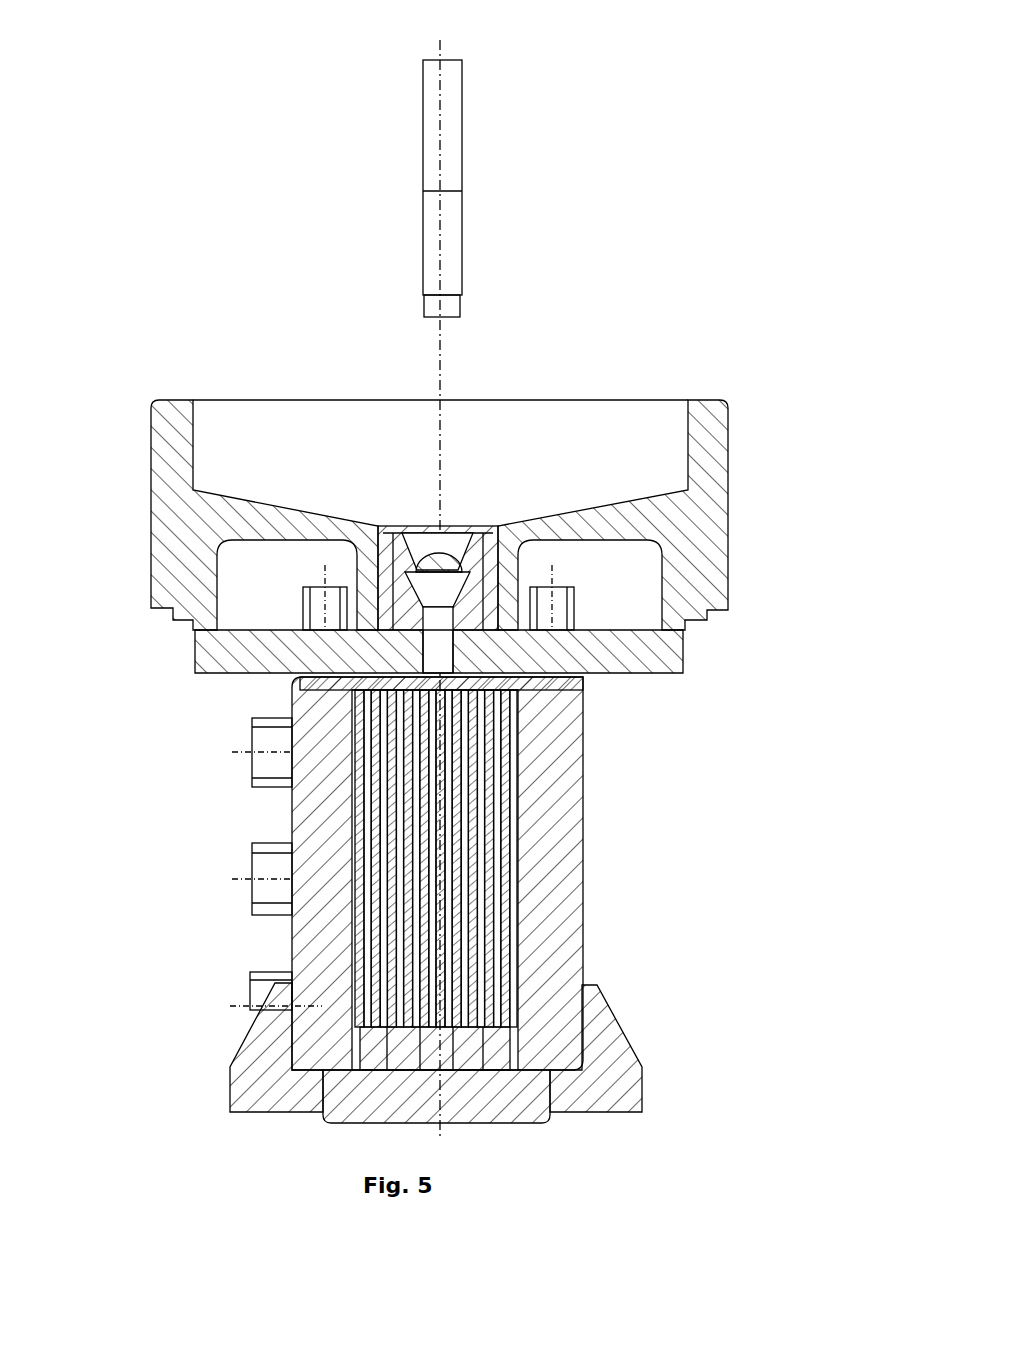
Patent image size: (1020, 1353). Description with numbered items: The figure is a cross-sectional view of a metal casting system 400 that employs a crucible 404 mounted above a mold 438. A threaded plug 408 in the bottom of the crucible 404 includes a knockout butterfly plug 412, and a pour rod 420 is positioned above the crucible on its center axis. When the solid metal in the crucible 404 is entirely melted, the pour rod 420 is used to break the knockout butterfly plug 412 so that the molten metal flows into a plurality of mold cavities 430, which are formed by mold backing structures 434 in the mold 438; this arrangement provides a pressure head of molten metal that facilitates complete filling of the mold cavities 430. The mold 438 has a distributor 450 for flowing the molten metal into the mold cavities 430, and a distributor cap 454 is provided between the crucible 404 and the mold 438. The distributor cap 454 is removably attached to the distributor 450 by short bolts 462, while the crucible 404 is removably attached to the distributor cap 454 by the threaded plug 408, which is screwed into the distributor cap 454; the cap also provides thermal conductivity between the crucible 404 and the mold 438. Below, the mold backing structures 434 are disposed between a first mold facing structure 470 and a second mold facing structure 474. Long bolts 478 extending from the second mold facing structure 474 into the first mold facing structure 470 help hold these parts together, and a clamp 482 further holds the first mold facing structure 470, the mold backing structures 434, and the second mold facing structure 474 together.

The metal casting system 400 is at (242, 318).
The pour rod 420 is at (463, 140).
The crucible 404 is at (728, 400).
The knockout butterfly plug 412 is at (480, 543).
The threaded plug 408 is at (503, 550).
The short bolts 462 is at (303, 597).
The distributor cap 454 is at (686, 650).
The distributor 450 is at (584, 681).
The mold 438 is at (600, 801).
The mold backing structures 434 is at (394, 877).
The mold cavities 430 is at (394, 971).
The long bolts 478 is at (258, 975).
The second mold facing structure 474 is at (329, 1073).
The first mold facing structure 470 is at (544, 1074).
The clamp 482 is at (646, 1084).